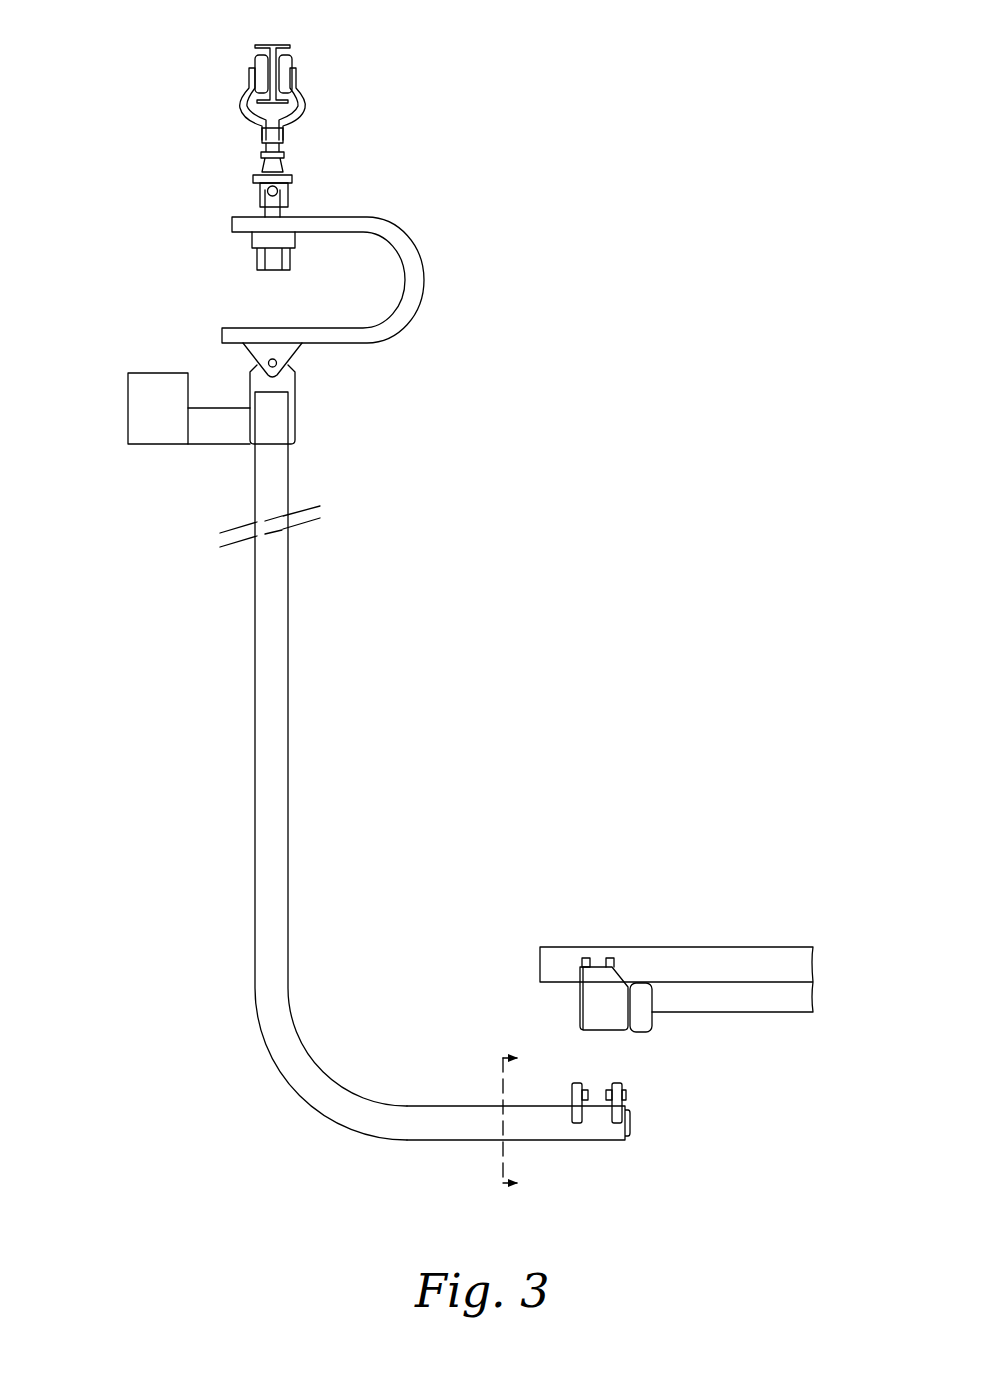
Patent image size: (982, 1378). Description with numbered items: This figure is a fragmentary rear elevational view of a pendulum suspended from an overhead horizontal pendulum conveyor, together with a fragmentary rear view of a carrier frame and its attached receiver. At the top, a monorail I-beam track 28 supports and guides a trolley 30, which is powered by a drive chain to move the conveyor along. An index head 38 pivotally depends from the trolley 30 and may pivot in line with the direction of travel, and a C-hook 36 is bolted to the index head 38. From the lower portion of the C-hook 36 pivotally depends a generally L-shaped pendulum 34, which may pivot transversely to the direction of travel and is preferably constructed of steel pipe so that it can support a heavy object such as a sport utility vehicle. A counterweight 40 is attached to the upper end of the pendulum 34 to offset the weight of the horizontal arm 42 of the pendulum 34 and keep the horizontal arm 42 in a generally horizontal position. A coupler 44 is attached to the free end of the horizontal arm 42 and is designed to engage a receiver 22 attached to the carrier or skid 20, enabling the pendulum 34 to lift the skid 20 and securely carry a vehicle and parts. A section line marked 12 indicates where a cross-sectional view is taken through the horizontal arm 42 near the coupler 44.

The section line 12- 12 is at (531, 1121).
The carrier 20 is at (612, 947).
The receiver 22 is at (578, 1003).
The monorail I-beam track 28 is at (276, 44).
The trolley 30 is at (262, 145).
The pendulum 34 is at (254, 615).
The C-hook 36 is at (408, 240).
The index head 38 is at (253, 242).
The counterweight 40 is at (162, 444).
The horizontal arm 42 is at (485, 1140).
The coupler 44 is at (615, 1066).